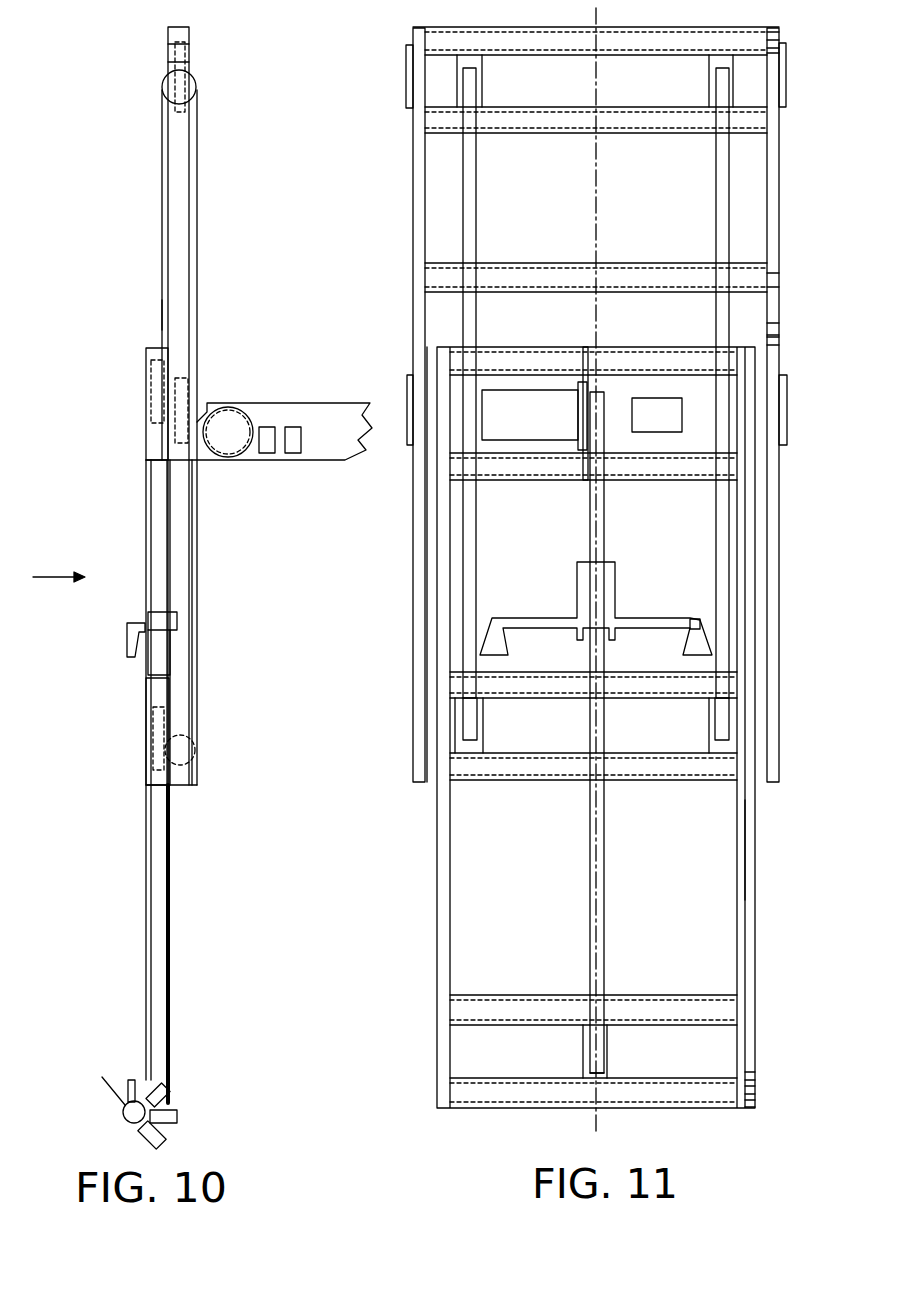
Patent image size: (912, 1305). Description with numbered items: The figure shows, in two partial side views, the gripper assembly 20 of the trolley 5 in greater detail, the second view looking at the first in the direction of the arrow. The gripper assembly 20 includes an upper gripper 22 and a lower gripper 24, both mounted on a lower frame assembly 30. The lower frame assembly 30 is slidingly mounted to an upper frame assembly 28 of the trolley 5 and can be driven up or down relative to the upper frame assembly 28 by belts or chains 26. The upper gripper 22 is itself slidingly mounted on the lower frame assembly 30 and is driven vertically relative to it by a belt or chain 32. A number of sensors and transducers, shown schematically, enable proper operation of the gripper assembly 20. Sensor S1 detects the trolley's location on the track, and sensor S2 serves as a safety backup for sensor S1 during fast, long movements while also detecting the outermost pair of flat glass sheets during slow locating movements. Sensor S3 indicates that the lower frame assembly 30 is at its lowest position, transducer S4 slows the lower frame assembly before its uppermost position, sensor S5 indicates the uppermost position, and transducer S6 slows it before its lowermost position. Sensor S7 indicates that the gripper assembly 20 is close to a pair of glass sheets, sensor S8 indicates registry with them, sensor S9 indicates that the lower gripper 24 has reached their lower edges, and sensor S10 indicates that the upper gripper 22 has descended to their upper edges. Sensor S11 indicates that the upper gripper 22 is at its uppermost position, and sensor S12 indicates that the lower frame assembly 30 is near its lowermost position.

In FIG. 10, the trolley 5 is at (312, 417).
In FIG. 10, the gripper assembly 20 is at (110, 736).
In FIG. 11, the gripper assembly 20 is at (774, 850).
In FIG. 10, the upper gripper 22 is at (125, 645).
In FIG. 11, the upper gripper 22 is at (488, 640).
In FIG. 10, the lower gripper 24 is at (136, 1093).
In FIG. 11, the lower gripper 24 is at (643, 1093).
In FIG. 10, the belts or chains 26 is at (190, 237).
In FIG. 11, the belts or chains 26 is at (475, 232).
In FIG. 10, the upper frame assembly 28 is at (207, 43).
In FIG. 11, the upper frame assembly 28 is at (450, 38).
In FIG. 10, the lower frame assembly 30 is at (157, 518).
In FIG. 11, the lower frame assembly 30 is at (448, 897).
In FIG. 11, the belt or chain 32 is at (600, 512).
In FIG. 10, the sensor S1 is at (268, 453).
In FIG. 10, the sensor S2 is at (293, 453).
In FIG. 10, the sensor S3 is at (146, 352).
In FIG. 11, the sensor S3 is at (775, 340).
In FIG. 10, the transducer S4 is at (170, 62).
In FIG. 11, the transducer S4 is at (772, 50).
In FIG. 10, the sensor S5 is at (168, 50).
In FIG. 11, the sensor S5 is at (780, 36).
In FIG. 10, the transducer S6 is at (160, 327).
In FIG. 11, the transducer S6 is at (775, 330).
In FIG. 10, the sensor S7 is at (170, 1090).
In FIG. 11, the sensor S7 is at (757, 1078).
In FIG. 10, the sensor S8 is at (177, 1115).
In FIG. 11, the sensor S8 is at (757, 1090).
In FIG. 10, the sensor S9 is at (155, 1143).
In FIG. 11, the sensor S9 is at (757, 1102).
In FIG. 10, the sensor S10 is at (163, 622).
In FIG. 11, the sensor S10 is at (695, 620).
In FIG. 10, the sensor S11 is at (146, 398).
In FIG. 11, the sensor S11 is at (660, 415).
In FIG. 10, the sensor S12 is at (160, 270).
In FIG. 11, the sensor S12 is at (772, 280).